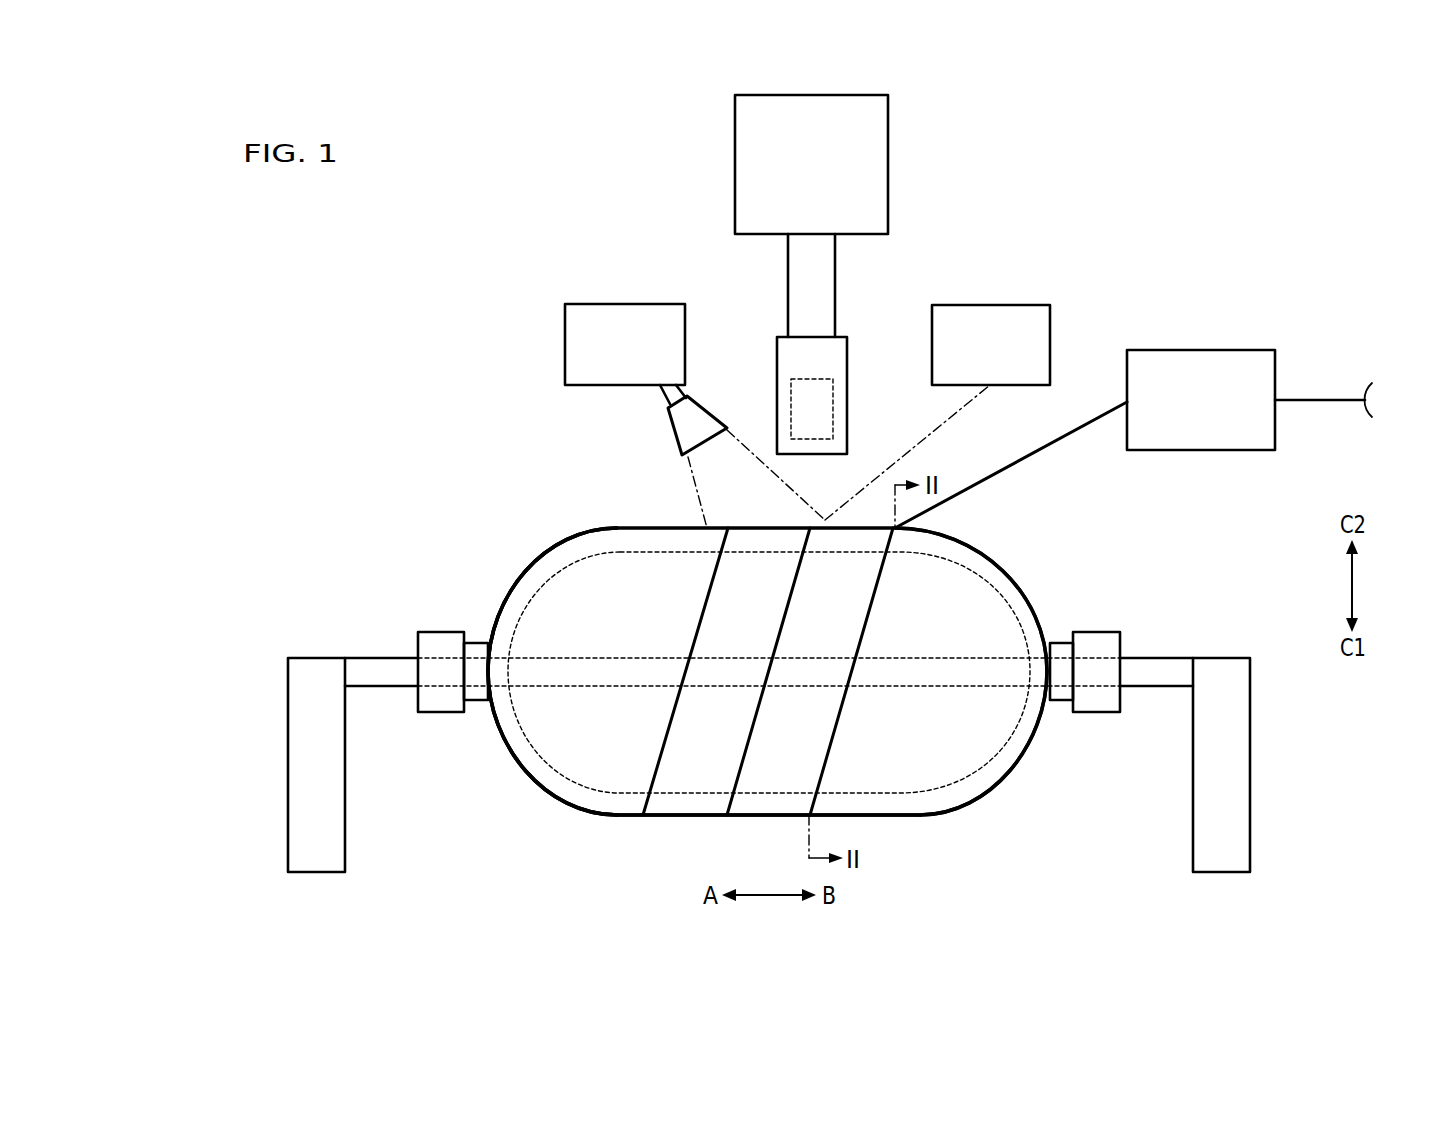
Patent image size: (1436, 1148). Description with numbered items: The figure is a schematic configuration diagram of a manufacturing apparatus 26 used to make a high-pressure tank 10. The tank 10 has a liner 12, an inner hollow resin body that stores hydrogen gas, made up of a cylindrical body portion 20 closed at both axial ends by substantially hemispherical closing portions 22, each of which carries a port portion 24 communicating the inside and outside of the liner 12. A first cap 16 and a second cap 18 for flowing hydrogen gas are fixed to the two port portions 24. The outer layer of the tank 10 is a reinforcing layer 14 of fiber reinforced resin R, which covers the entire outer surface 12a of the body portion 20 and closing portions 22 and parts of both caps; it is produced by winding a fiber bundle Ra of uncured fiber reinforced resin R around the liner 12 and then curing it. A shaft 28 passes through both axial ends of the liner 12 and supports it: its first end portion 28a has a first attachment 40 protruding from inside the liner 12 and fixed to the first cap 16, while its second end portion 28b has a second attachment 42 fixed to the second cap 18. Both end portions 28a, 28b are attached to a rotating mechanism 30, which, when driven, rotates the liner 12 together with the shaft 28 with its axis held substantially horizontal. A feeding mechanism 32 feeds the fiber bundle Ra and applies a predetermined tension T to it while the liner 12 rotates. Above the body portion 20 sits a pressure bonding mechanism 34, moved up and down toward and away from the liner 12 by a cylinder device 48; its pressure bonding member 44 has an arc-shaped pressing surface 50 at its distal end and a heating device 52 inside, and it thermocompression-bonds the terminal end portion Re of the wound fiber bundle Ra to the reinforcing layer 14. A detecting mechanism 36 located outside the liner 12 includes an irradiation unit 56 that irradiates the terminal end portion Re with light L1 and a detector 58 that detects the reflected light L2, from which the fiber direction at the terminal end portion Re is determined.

The high-pressure tank 10 is at (771, 686).
The liner 12 is at (550, 773).
The outer surface 12a is at (552, 671).
The reinforcing layer 14 is at (929, 822).
The first cap 16 is at (477, 650).
The second cap 18 is at (1062, 650).
The body portion 20 is at (665, 548).
The closing portions 22 is at (527, 740).
The port portion 24 is at (771, 639).
The manufacturing apparatus 26 is at (381, 474).
The shaft 28 is at (769, 683).
The first end portion 28a is at (418, 655).
The second end portion 28b is at (1122, 655).
The rotating mechanism 30 is at (262, 789).
The feeding mechanism 32 is at (1228, 362).
The pressure bonding mechanism 34 is at (912, 134).
The detecting mechanism 36 is at (616, 288).
The first attachment 40 is at (441, 700).
The second attachment 42 is at (1097, 700).
The pressure bonding member 44 is at (848, 430).
The cylinder device 48 is at (820, 274).
The pressing surface 50 is at (793, 456).
The heating device 52 is at (815, 388).
The irradiation unit 56 is at (678, 425).
The detector 58 is at (1005, 313).
The fiber reinforced resin R is at (785, 671).
The fiber bundle Ra is at (837, 720).
The terminal end portion Re is at (826, 518).
The light L1 is at (755, 455).
The reflected light L2 is at (946, 424).
The tension T is at (1068, 447).